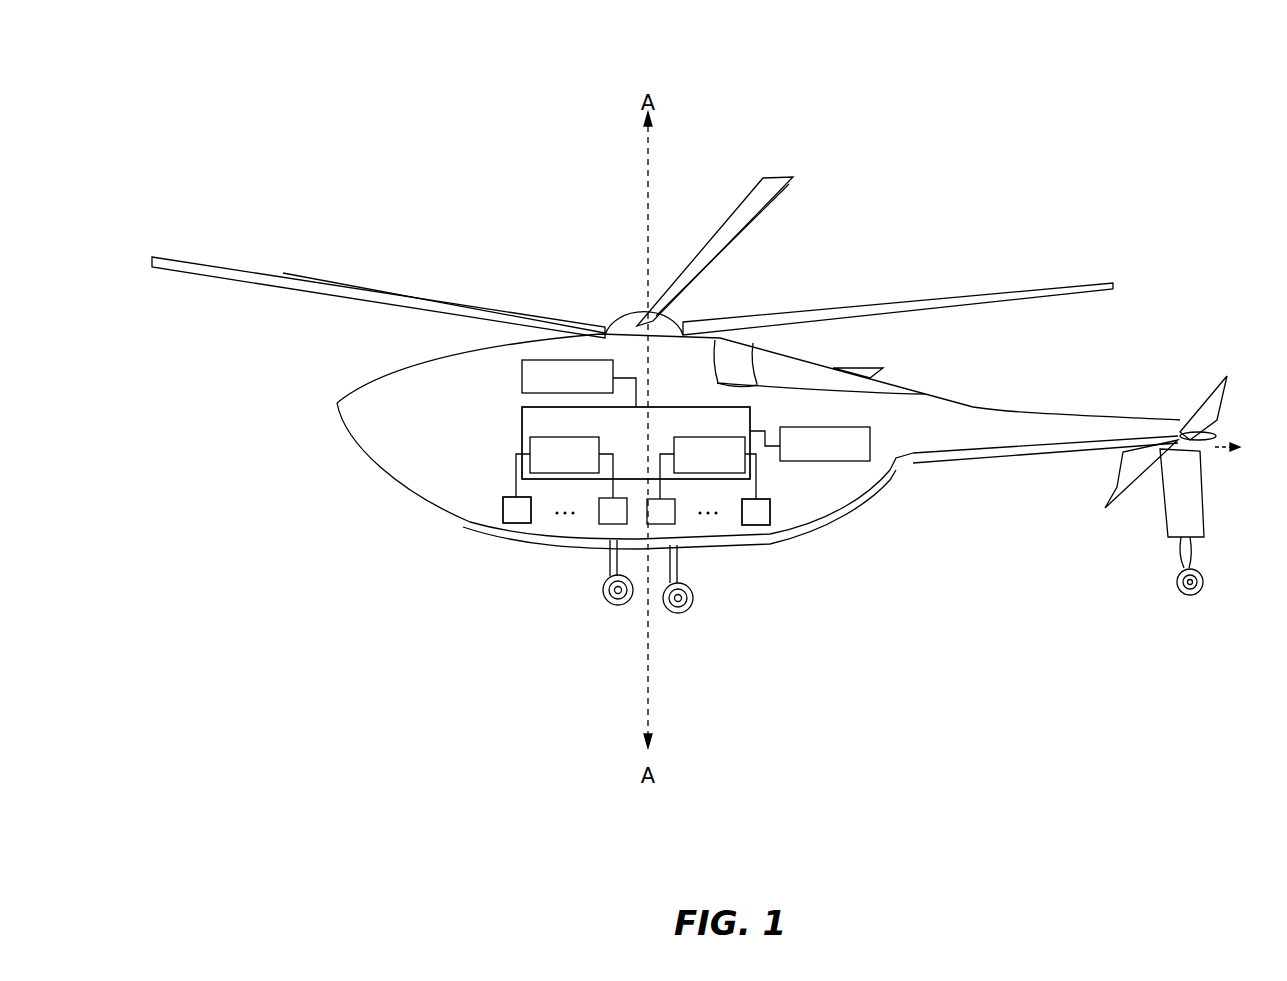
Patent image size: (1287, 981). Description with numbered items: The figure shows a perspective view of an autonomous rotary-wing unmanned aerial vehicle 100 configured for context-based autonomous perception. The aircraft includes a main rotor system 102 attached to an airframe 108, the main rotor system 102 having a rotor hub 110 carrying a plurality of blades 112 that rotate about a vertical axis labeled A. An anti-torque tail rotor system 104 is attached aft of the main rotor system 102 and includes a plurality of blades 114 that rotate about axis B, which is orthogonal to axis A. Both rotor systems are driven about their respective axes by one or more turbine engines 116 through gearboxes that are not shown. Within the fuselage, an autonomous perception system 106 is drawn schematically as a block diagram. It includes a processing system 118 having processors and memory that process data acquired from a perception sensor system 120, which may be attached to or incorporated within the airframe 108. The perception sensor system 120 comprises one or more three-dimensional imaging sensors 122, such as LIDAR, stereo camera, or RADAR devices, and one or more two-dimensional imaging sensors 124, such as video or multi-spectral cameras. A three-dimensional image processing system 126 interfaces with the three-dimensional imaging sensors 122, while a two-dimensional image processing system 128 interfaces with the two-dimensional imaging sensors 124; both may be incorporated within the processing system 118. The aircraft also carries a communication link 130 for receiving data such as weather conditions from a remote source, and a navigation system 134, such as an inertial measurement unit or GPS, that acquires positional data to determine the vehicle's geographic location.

The autonomous rotary-wing unmanned aerial vehicle 100 is at (378, 43).
The main rotor system 102 is at (563, 244).
The tail rotor system 104 is at (1183, 342).
The autonomous perception system 106 is at (500, 420).
The airframe 108 is at (932, 452).
The rotor hub 110 is at (619, 317).
The blades 112 is at (943, 297).
The blades 114 is at (1117, 494).
The turbine engines 116 is at (734, 377).
The processing system 118 is at (636, 443).
The perception sensor system 120 is at (488, 478).
The three-dimensional imaging sensors 122 is at (472, 536).
The two-dimensional imaging sensors 124 is at (806, 523).
The three-dimensional image processing system 126 is at (564, 455).
The two-dimensional image processing system 128 is at (709, 455).
The communication link 130 is at (825, 444).
The navigation system 134 is at (567, 376).